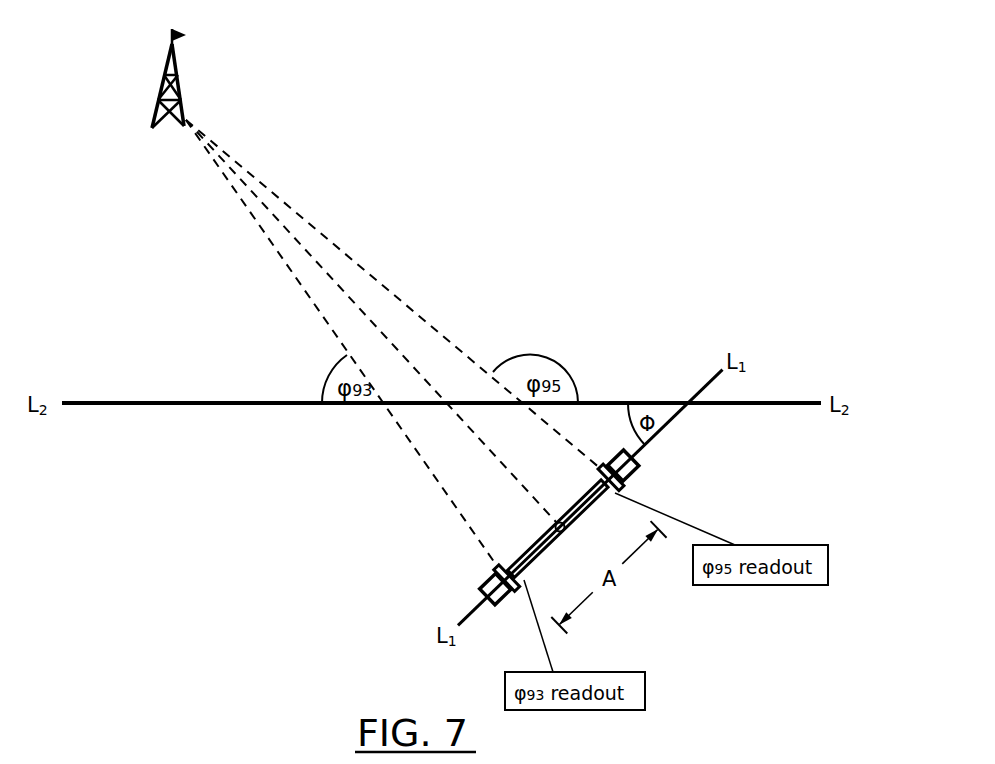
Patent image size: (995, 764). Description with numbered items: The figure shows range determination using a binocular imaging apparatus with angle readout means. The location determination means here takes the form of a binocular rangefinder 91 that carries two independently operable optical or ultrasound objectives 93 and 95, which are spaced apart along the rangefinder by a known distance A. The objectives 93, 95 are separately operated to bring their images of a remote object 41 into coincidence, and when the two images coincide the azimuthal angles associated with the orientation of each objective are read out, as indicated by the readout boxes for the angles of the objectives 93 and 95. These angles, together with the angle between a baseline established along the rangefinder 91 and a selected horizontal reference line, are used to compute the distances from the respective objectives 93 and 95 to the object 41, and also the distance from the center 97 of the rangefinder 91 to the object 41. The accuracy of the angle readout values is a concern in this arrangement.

The object 41 is at (177, 65).
The binocular rangefinder 91 is at (414, 510).
The first objective 93 is at (512, 597).
The second objective 95 is at (628, 479).
The center of the rangefinder 97 is at (557, 521).